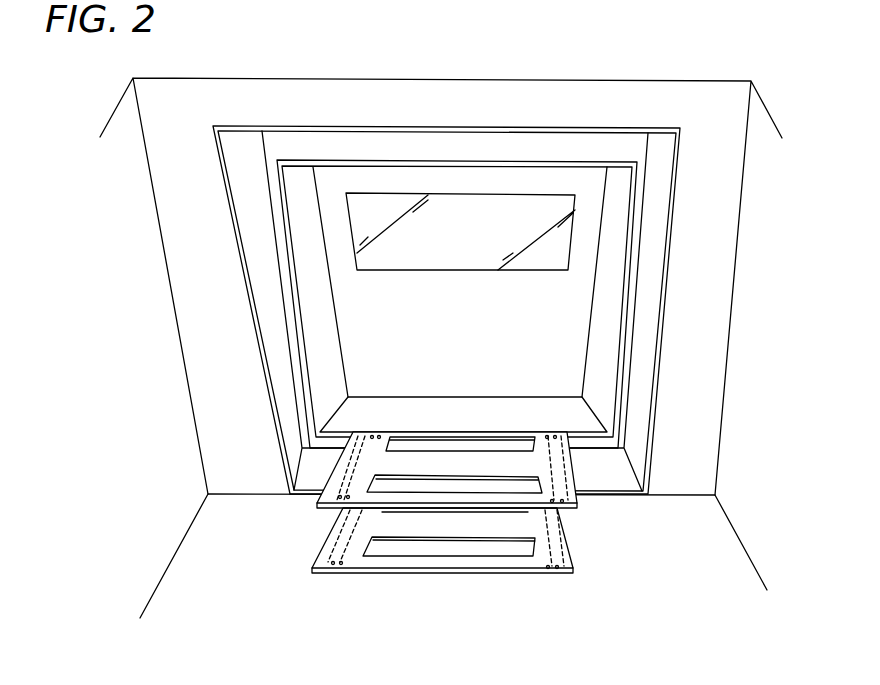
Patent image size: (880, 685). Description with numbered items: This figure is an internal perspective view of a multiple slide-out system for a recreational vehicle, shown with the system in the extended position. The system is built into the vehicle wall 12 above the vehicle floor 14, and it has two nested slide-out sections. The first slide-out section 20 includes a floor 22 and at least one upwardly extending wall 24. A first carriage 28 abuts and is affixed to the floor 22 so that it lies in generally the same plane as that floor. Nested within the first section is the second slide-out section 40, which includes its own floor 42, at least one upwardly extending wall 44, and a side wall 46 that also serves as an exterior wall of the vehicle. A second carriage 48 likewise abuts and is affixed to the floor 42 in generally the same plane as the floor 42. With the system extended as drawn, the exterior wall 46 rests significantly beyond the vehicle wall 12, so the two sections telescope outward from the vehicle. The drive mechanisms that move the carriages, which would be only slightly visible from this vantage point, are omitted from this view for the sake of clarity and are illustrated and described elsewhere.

The vehicle wall 12 is at (717, 163).
The floor 14 is at (705, 552).
The first slide-out section 20 is at (659, 346).
The floor 22 is at (450, 507).
The upwardly extending wall 24 is at (290, 390).
The first carriage 28 is at (315, 554).
The second slide-out section 40 is at (627, 279).
The floor 42 is at (362, 412).
The upwardly extending wall 44 is at (323, 312).
The side wall 46 is at (511, 318).
The second carriage 48 is at (580, 503).